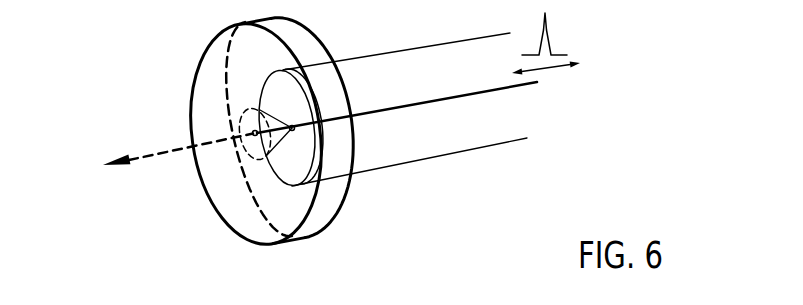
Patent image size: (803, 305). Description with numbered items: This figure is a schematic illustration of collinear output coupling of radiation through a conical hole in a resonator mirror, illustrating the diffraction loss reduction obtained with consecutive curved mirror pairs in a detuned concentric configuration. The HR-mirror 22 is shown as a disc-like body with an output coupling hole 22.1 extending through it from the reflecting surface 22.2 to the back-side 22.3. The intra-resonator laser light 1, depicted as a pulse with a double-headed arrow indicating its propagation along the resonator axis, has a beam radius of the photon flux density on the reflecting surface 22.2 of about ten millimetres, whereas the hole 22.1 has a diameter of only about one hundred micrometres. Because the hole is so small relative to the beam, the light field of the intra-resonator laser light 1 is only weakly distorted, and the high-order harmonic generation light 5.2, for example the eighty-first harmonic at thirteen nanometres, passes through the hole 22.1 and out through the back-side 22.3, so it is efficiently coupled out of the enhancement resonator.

The intra-resonator laser light 1 is at (546, 37).
The high-order harmonic generation light 5.2 is at (158, 159).
The HR-mirror 22 is at (243, 213).
The output coupling hole 22.1 is at (247, 134).
The reflecting surface 22.2 is at (338, 193).
The back-side 22.3 is at (230, 188).